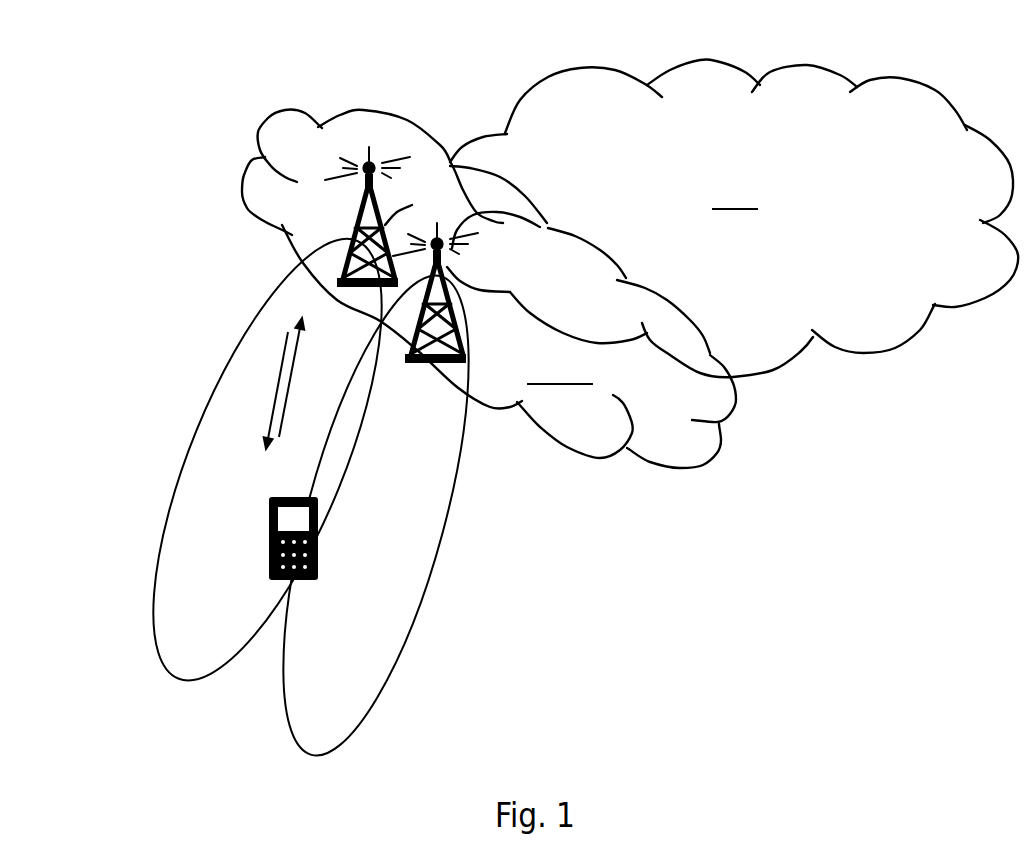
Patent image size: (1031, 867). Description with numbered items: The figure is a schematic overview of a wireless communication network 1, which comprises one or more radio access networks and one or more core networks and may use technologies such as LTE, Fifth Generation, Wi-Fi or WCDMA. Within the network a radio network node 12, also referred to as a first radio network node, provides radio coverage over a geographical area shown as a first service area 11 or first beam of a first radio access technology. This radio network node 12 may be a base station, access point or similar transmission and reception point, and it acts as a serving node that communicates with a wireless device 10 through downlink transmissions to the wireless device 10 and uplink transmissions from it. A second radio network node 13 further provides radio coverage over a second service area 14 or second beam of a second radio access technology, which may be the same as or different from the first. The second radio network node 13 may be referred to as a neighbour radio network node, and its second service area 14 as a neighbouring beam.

The wireless communication network 1 is at (207, 72).
The wireless device 10 is at (268, 510).
The first service area 11 is at (198, 634).
The radio network node 12 is at (385, 217).
The second radio network node 13 is at (452, 293).
The second service area 14 is at (347, 712).